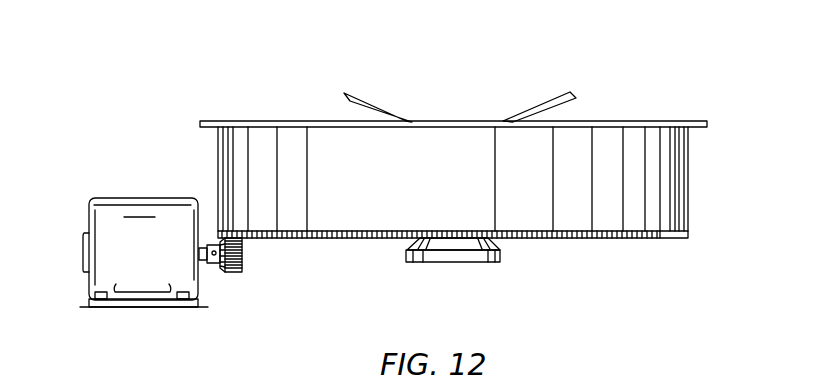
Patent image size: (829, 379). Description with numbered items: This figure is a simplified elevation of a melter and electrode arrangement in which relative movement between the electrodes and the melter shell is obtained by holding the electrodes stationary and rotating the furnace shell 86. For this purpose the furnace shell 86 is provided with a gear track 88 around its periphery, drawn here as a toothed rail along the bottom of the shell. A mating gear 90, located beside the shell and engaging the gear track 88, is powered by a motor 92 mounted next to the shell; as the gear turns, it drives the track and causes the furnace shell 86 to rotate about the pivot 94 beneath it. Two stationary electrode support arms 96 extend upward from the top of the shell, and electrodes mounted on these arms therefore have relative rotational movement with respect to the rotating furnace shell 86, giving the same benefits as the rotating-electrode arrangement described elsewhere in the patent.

The furnace shell 86 is at (667, 183).
The gear track 88 is at (233, 233).
The mating gear 90 is at (232, 273).
The motor 92 is at (155, 212).
The pivot 94 is at (450, 243).
The stationary electrode support arms 96 is at (537, 105).